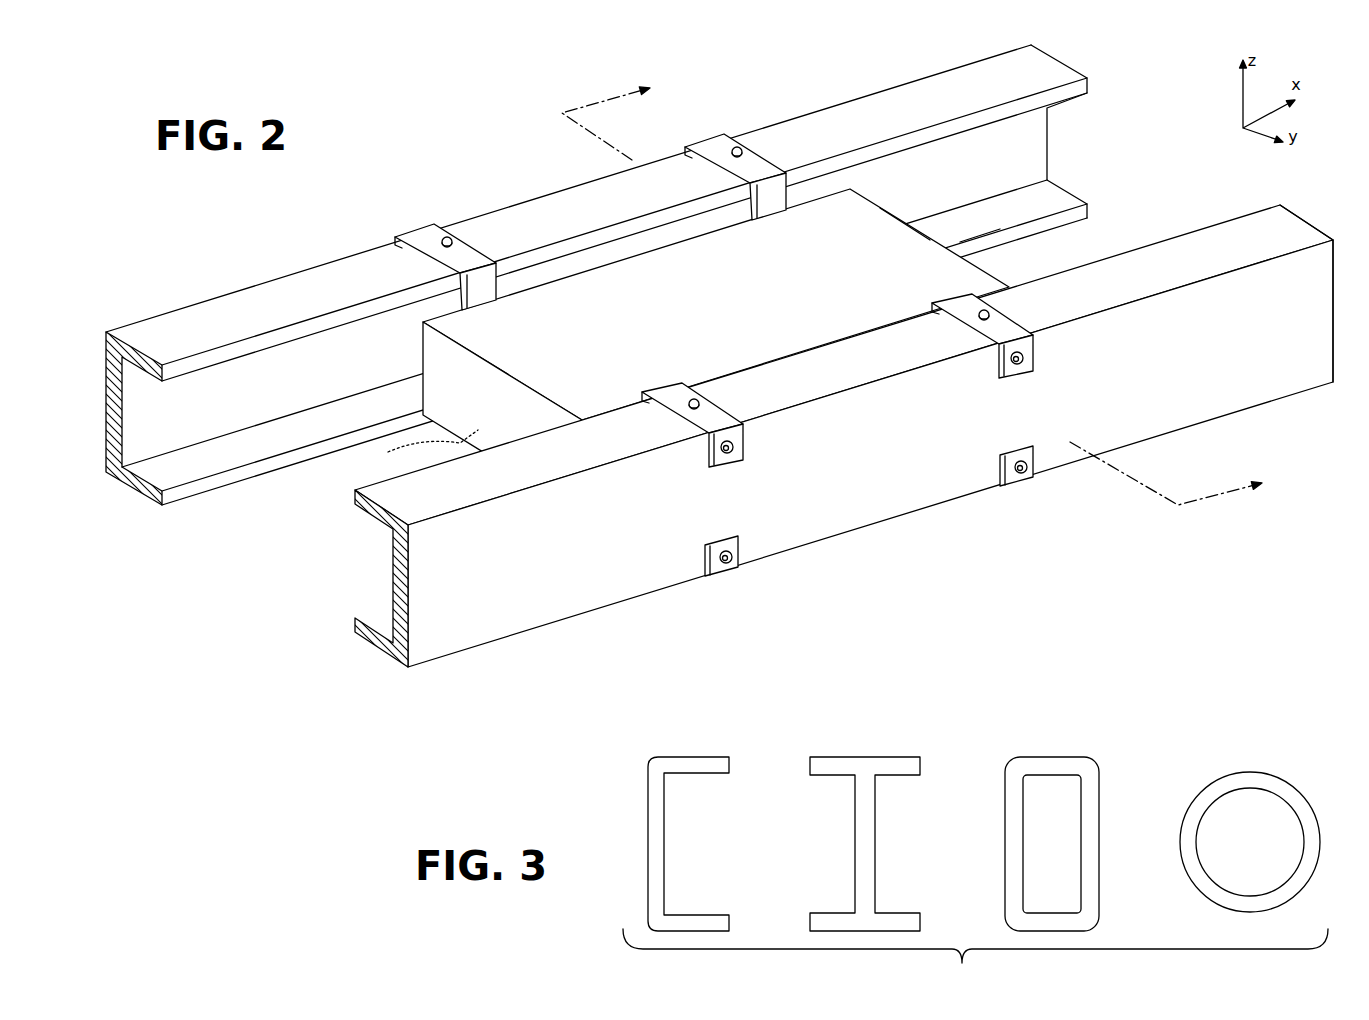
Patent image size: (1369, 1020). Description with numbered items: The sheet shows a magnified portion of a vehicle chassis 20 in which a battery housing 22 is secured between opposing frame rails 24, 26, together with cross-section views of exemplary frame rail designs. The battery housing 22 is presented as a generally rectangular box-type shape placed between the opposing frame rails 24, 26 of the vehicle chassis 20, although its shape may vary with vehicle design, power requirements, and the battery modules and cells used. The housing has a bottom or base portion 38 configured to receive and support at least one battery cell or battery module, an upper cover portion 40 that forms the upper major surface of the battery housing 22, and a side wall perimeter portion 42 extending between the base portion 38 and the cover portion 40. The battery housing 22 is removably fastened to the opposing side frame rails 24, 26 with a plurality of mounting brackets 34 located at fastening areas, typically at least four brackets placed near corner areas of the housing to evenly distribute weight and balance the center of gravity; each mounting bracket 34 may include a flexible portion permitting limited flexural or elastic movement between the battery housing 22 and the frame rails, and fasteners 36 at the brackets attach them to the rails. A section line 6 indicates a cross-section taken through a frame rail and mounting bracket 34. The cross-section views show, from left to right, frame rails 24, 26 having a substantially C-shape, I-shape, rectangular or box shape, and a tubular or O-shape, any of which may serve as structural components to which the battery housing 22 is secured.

In FIG. 2, the section line 6- 6 is at (926, 289).
In FIG. 2, the vehicle chassis 20 is at (1320, 224).
In FIG. 2, the battery housing 22 is at (987, 270).
In FIG. 2, the frame rail 24 is at (163, 320).
In FIG. 3, the frame rail 24 is at (982, 741).
In FIG. 2, the frame rail 26 is at (463, 617).
In FIG. 3, the frame rail 26 is at (1162, 800).
In FIG. 2, the mounting bracket 34 is at (468, 255).
In FIG. 2, the fastener 36 is at (446, 237).
In FIG. 2, the base portion 38 is at (418, 450).
In FIG. 2, the cover portion 40 is at (910, 230).
In FIG. 2, the side wall perimeter portion 42 is at (445, 367).